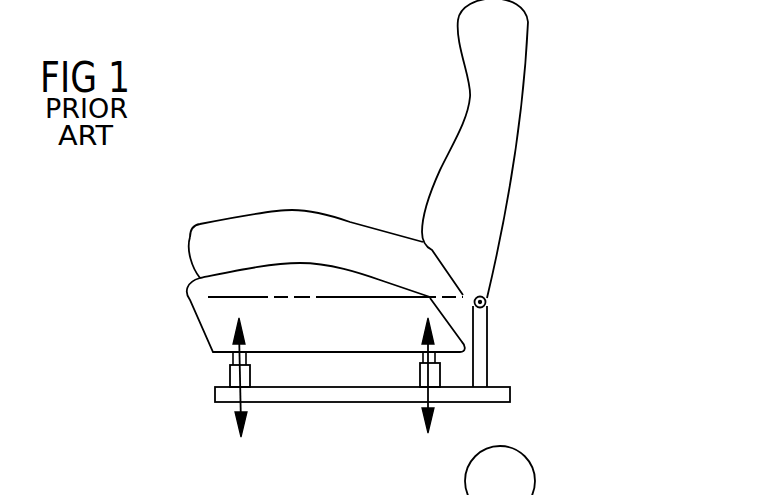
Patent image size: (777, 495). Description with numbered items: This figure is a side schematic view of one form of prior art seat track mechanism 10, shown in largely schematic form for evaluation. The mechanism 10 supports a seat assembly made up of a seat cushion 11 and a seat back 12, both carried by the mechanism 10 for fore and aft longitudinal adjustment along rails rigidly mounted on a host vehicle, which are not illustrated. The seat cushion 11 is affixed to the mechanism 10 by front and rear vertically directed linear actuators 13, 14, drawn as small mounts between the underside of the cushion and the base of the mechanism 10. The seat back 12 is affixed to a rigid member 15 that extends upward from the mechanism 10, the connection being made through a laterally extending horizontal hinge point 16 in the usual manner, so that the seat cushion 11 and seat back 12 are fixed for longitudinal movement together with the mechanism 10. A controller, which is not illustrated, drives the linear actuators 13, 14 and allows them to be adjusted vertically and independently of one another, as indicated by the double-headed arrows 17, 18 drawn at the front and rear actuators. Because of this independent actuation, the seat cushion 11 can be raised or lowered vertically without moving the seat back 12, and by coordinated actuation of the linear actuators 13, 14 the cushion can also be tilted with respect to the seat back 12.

The seat track mechanism 10 is at (515, 369).
The seat cushion 11 is at (204, 317).
The seat back 12 is at (503, 150).
The front vertically directed linear actuator 13 is at (230, 375).
The rear vertically directed linear actuator 14 is at (420, 378).
The rigid member 15 is at (487, 326).
The laterally extending horizontal hinge point 16 is at (485, 302).
The arrow 17 is at (233, 415).
The arrow 18 is at (427, 420).